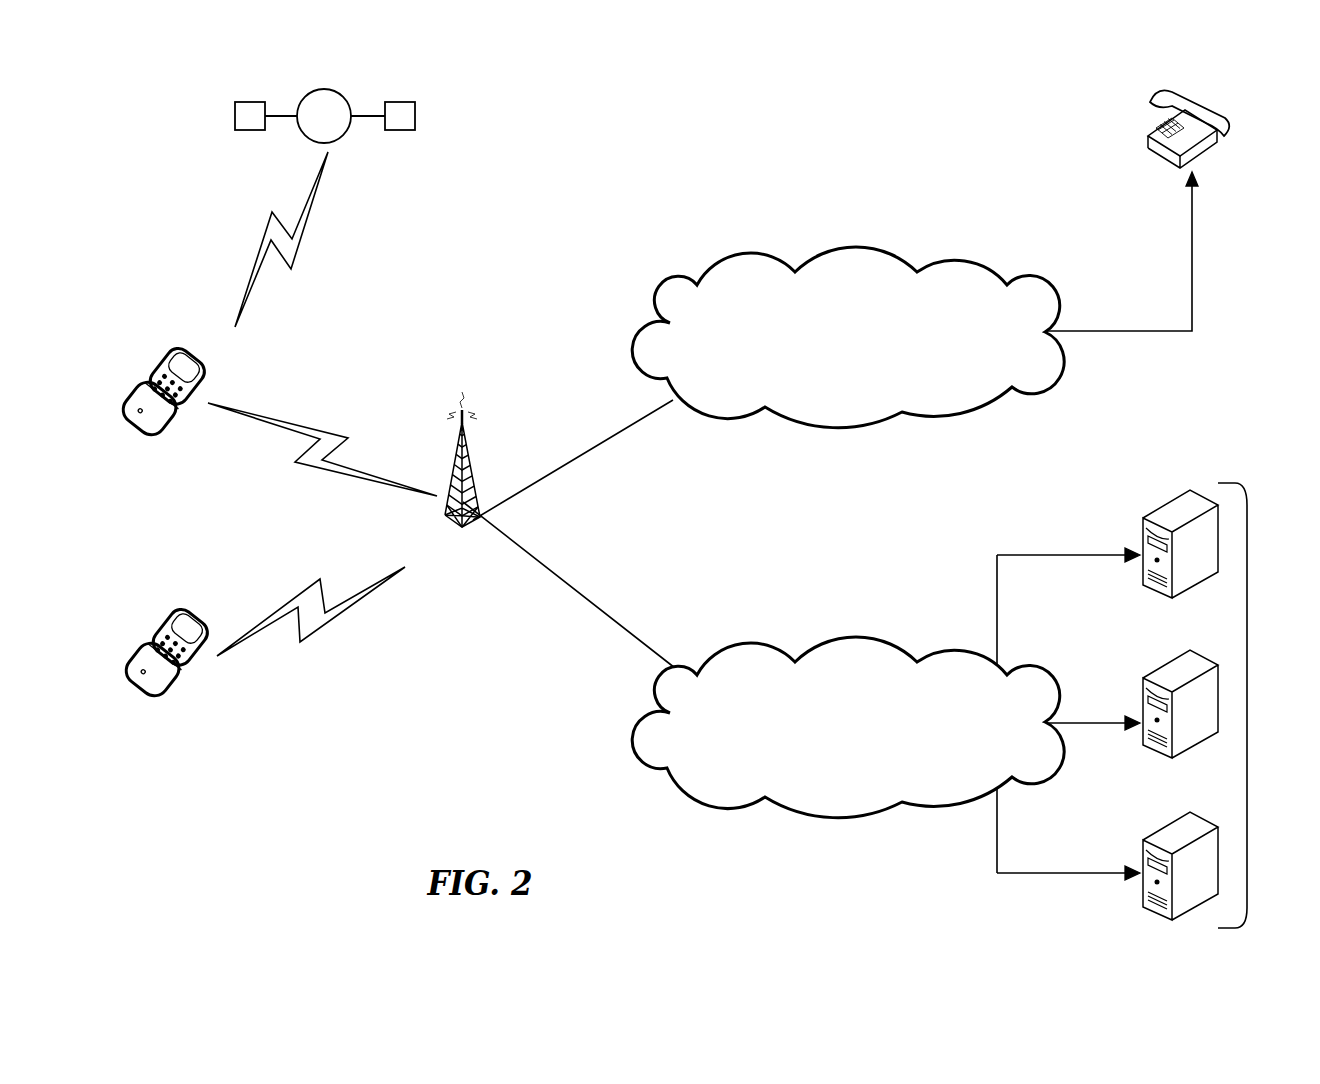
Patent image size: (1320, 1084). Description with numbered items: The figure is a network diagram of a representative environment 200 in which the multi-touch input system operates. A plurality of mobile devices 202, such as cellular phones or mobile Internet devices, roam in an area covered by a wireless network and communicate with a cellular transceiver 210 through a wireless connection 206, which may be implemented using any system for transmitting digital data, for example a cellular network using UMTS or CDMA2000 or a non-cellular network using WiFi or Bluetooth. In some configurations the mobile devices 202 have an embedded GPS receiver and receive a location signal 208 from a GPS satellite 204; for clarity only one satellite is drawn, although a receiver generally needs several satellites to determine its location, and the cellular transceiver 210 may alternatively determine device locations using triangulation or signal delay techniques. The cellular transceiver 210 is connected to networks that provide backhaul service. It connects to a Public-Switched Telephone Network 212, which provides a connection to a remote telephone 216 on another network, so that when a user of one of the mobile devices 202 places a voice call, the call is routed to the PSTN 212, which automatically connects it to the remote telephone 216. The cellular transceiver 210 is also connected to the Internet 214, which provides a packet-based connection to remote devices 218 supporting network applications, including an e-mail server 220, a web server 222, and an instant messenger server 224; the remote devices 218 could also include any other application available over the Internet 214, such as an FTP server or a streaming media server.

The representative environment 200 is at (290, 748).
The mobile devices 202 is at (210, 377).
The GPS satellite 204 is at (348, 97).
The wireless connection 206 is at (357, 477).
The location signal 208 is at (295, 256).
The cellular transceiver 210 is at (477, 528).
The Public-Switched Telephone Network 212 is at (753, 252).
The Internet 214 is at (753, 642).
The remote telephone 216 is at (1145, 142).
The remote devices 218 is at (1247, 695).
The e-mail server 220 is at (1152, 515).
The web server 222 is at (1152, 677).
The instant messenger server 224 is at (1152, 840).